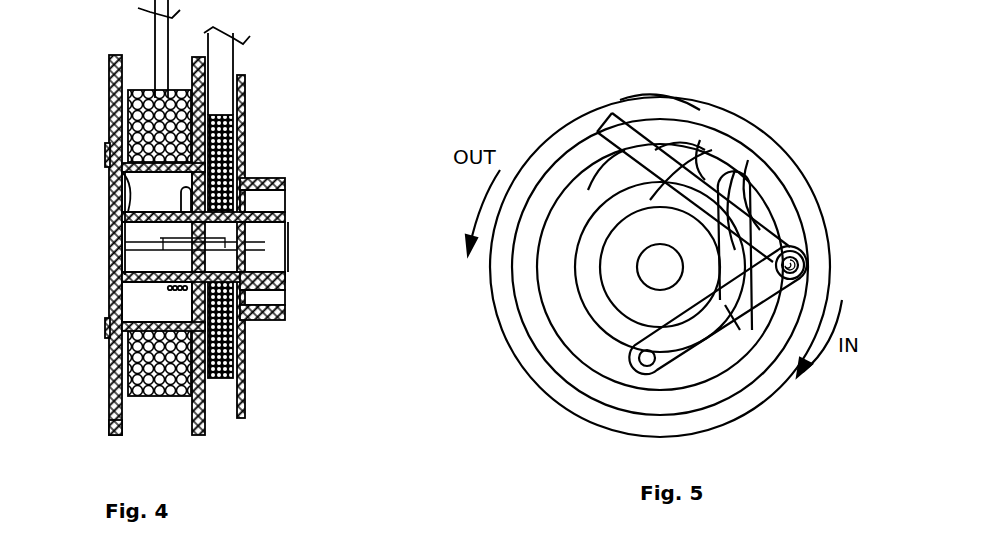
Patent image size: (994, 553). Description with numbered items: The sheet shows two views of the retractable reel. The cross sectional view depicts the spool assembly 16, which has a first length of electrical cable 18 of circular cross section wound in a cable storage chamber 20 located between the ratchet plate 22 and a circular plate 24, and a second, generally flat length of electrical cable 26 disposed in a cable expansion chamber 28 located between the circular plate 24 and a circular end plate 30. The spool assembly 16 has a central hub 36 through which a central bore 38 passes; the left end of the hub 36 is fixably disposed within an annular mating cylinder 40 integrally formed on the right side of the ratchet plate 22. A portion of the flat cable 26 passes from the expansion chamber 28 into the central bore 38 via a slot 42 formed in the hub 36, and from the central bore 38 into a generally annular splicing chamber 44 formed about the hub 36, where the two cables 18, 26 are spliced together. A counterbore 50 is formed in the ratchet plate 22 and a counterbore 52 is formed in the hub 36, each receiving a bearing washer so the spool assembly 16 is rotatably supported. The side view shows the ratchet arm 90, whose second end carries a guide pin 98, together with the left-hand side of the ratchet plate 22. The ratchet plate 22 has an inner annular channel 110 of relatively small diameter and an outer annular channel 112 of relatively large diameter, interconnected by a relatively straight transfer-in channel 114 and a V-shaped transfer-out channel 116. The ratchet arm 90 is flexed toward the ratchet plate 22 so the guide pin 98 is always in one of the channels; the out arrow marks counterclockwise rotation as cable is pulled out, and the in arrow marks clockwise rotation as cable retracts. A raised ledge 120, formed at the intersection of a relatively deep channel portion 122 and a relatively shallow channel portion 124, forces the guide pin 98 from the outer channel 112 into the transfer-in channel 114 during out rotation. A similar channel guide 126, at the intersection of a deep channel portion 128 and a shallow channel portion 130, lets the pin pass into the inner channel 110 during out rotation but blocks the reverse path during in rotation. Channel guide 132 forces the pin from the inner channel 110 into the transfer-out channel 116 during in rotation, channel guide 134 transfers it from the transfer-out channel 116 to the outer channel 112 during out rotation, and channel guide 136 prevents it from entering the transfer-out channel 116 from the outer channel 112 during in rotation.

In FIG. 4, the spool assembly 16 is at (312, 72).
In FIG. 4, the first length of electrical cable 18 is at (155, 68).
In FIG. 4, the cable storage chamber 20 is at (136, 398).
In FIG. 4, the ratchet plate 22 is at (112, 438).
In FIG. 5, the ratchet plate 22 is at (700, 100).
In FIG. 4, the circular plate 24 is at (195, 432).
In FIG. 4, the second length of electrical cable 26 is at (238, 62).
In FIG. 4, the cable expansion chamber 28 is at (211, 382).
In FIG. 4, the circular end plate 30 is at (242, 380).
In FIG. 4, the central hub 36 is at (320, 196).
In FIG. 4, the central bore 38 is at (285, 290).
In FIG. 4, the annular mating cylinder 40 is at (120, 185).
In FIG. 4, the slot 42 is at (128, 252).
In FIG. 4, the splicing chamber 44 is at (163, 315).
In FIG. 4, the counterbore 50 is at (122, 228).
In FIG. 4, the counterbore 52 is at (288, 268).
In FIG. 5, the ratchet arm 90 is at (686, 352).
In FIG. 5, the guide pin 98 is at (815, 187).
In FIG. 4, the inner annular channel 110 is at (108, 153).
In FIG. 5, the inner annular channel 110 is at (612, 310).
In FIG. 4, the outer annular channel 112 is at (109, 72).
In FIG. 5, the outer annular channel 112 is at (578, 364).
In FIG. 5, the transfer-in channel 114 is at (590, 190).
In FIG. 5, the transfer-out channel 116 is at (725, 130).
In FIG. 5, the raised ledge 120 is at (617, 125).
In FIG. 5, the relatively deep channel portion 122 is at (605, 140).
In FIG. 5, the relatively shallow channel portion 124 is at (630, 100).
In FIG. 5, the channel guide 126 is at (670, 145).
In FIG. 5, the relatively deep channel portion 128 is at (672, 195).
In FIG. 5, the relatively shallow channel portion 130 is at (600, 237).
In FIG. 5, the channel guide 132 is at (693, 298).
In FIG. 5, the channel guide 134 is at (762, 152).
In FIG. 5, the channel guide 136 is at (810, 178).